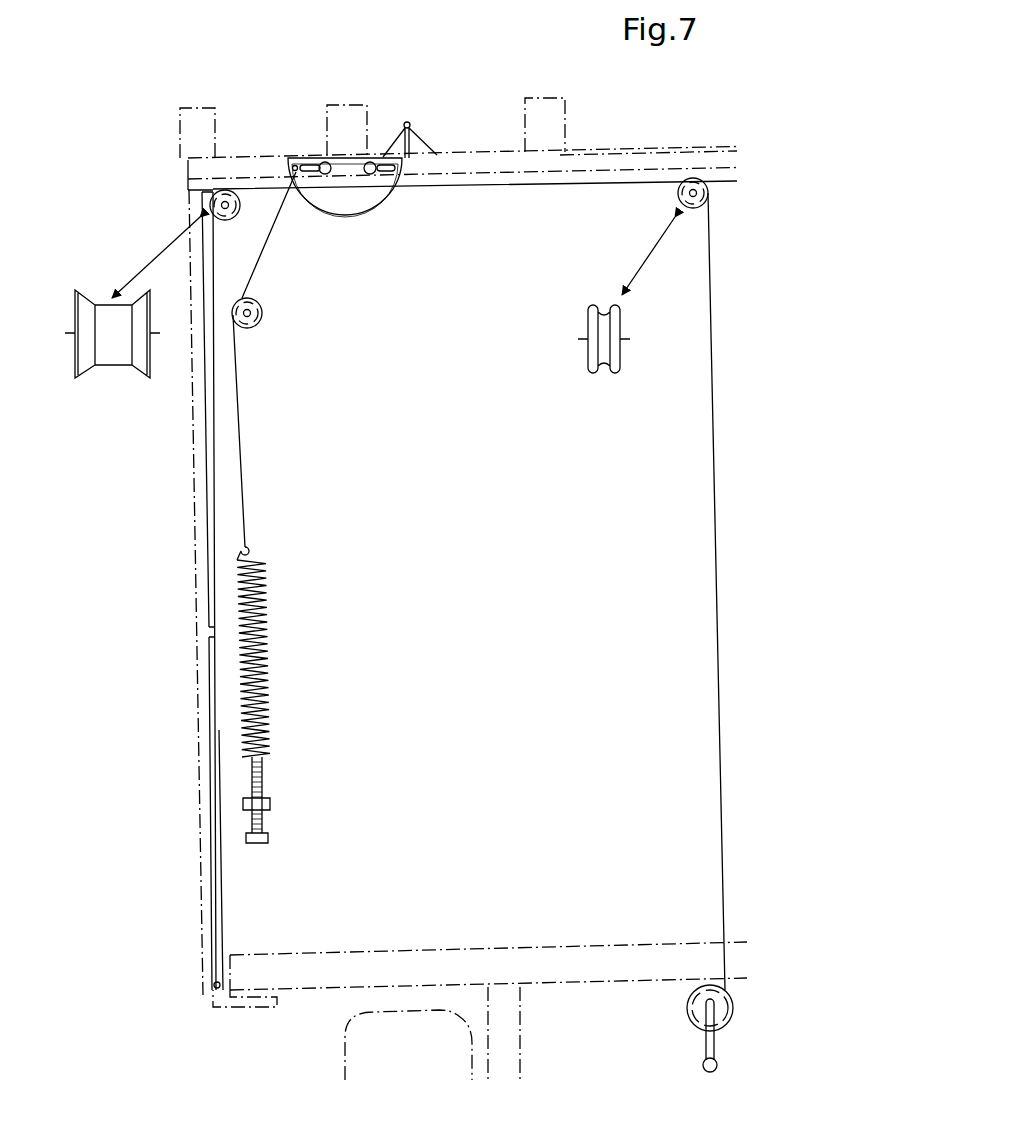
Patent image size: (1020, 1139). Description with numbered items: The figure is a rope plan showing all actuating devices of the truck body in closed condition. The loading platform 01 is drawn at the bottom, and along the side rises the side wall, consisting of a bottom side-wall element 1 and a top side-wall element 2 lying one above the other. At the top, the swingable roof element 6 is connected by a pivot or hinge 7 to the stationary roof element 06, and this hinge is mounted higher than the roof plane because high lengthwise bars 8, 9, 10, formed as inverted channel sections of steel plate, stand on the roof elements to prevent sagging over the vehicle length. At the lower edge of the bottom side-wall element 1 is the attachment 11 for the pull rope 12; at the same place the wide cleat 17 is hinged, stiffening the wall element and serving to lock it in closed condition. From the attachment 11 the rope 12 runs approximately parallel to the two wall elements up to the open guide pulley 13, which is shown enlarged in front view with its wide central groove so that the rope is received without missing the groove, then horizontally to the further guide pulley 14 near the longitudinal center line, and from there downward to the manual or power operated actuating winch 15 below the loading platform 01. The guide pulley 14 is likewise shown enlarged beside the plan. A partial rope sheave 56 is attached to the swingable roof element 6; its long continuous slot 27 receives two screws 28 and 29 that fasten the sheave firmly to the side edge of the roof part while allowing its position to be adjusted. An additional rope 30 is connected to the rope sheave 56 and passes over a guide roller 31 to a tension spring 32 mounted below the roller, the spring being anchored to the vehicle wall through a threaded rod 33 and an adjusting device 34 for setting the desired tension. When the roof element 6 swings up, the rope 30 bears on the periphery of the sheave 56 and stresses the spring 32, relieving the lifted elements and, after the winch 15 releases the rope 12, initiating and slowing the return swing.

The bottom side-wall element 1 is at (207, 750).
The top side-wall element 2 is at (200, 470).
The swingable roof element 6 is at (253, 158).
The stationary roof element 06 is at (632, 157).
The loading platform 01 is at (578, 953).
The pivot or hinge 7 is at (407, 122).
The lengthwise bar 8 is at (190, 108).
The lengthwise bar 9 is at (350, 105).
The lengthwise bar 10 is at (548, 98).
The attachment 11 is at (214, 987).
The pull rope 12 is at (712, 422).
The open guide pulley 13 is at (103, 322).
The guide pulley 14 is at (600, 318).
The actuating winch 15 is at (690, 1013).
The wide cleat 17 is at (233, 1007).
The slot 27 is at (305, 160).
The screw 28 is at (325, 174).
The screw 29 is at (373, 174).
The additional rope 30 is at (265, 275).
The guide roller 31 is at (262, 315).
The tension spring 32 is at (268, 605).
The threaded rod 33 is at (270, 800).
The adjusting device 34 is at (262, 845).
The rope sheave 56 is at (363, 200).